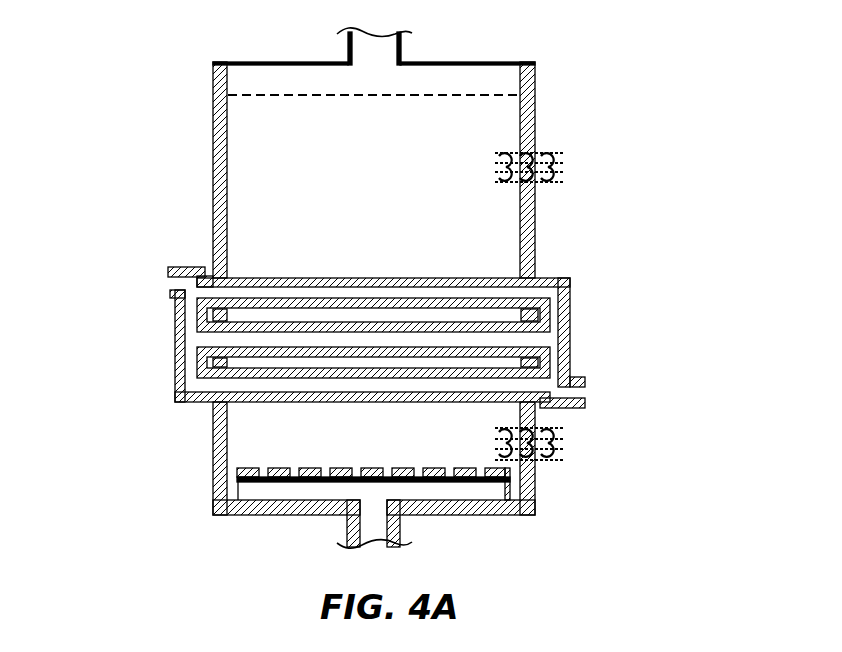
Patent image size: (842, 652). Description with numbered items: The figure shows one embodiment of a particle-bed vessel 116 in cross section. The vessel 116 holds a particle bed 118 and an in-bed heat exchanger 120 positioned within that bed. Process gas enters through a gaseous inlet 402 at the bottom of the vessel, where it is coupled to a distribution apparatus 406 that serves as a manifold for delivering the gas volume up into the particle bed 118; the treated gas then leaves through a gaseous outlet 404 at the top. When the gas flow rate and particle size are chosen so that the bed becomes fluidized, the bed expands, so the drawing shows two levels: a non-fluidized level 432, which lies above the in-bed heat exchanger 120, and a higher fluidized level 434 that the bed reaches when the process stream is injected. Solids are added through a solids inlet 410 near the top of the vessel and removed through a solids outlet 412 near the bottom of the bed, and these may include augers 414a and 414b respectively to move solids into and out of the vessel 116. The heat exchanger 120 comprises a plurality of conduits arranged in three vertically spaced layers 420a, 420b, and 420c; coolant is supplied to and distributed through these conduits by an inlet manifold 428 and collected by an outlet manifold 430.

The particle-bed vessel 116 is at (145, 64).
The gaseous outlet 404 is at (400, 42).
The fluidized level 434 is at (485, 93).
The solids inlet 410 is at (541, 153).
The auger 414a is at (541, 184).
The non-fluidized level 432 is at (480, 258).
The in-bed heat exchanger 120 is at (150, 315).
The inlet manifold 428 is at (192, 343).
The conduit layer 420c is at (572, 296).
The outlet manifold 430 is at (553, 325).
The conduit layer 420b is at (572, 347).
The conduit layer 420a is at (572, 375).
The solids outlet 412 is at (543, 426).
The particle bed 118 is at (250, 428).
The distribution apparatus 406 is at (238, 480).
The auger 414b is at (543, 462).
The gaseous inlet 402 is at (400, 530).